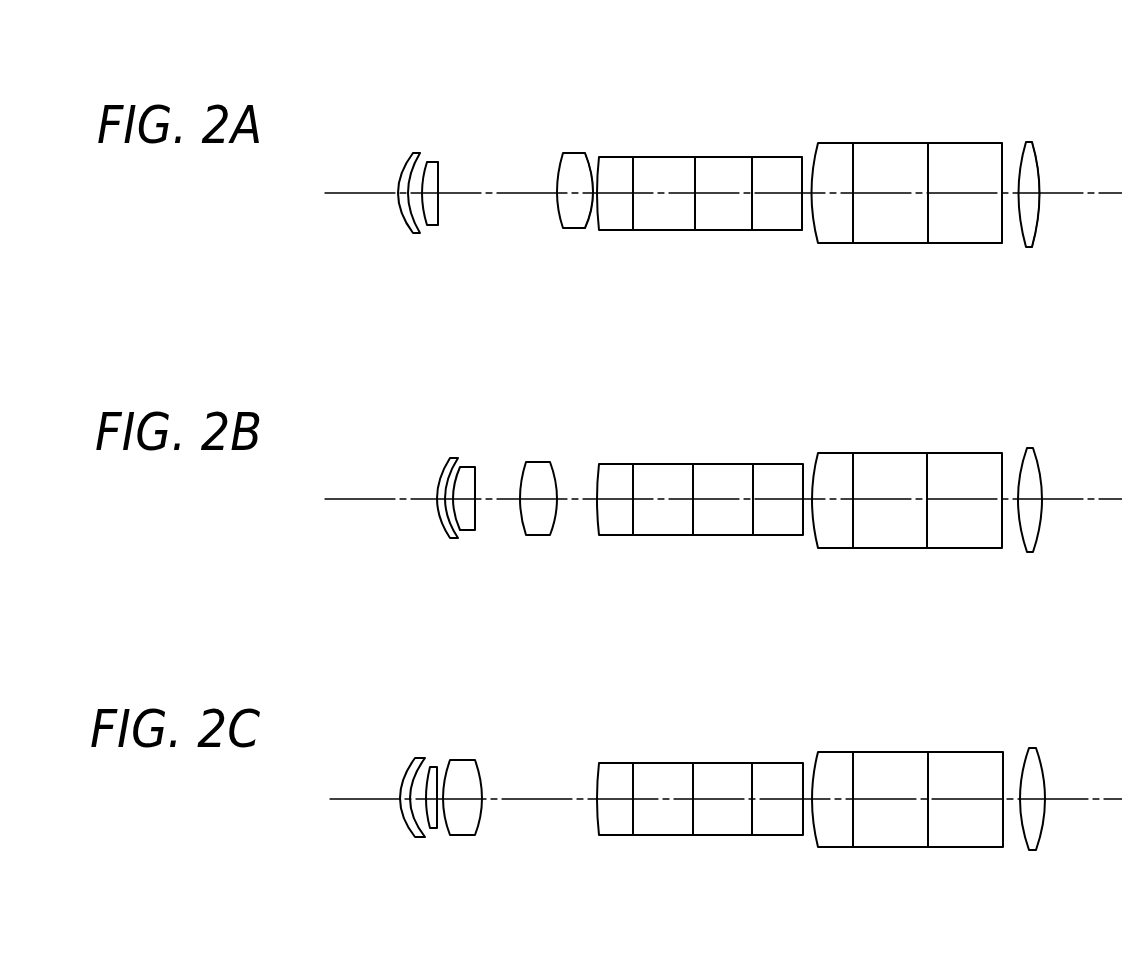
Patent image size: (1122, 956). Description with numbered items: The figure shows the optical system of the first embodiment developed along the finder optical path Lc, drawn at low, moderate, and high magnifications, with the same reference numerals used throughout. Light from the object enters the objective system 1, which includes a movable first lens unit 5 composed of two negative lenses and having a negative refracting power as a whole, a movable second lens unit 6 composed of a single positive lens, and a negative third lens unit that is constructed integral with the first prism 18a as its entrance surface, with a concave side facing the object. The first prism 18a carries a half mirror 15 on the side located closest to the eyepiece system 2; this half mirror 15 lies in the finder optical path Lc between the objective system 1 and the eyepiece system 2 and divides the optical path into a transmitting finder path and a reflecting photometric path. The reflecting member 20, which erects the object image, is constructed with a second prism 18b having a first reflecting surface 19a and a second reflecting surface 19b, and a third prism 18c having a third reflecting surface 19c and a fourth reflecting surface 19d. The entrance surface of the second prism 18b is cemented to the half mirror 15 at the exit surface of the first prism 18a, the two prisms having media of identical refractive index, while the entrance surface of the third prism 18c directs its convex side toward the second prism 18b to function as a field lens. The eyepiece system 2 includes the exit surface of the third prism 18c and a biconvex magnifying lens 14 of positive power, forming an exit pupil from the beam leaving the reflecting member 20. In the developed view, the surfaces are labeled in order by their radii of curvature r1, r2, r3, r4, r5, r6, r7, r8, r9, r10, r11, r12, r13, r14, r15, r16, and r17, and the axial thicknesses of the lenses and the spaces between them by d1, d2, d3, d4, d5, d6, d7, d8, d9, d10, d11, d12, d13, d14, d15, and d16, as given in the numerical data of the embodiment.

In FIG. 2A, the radius of curvature of first lens surface r1 is at (401, 174).
In FIG. 2A, the radius of curvature of second lens surface r2 is at (412, 152).
In FIG. 2A, the radius of curvature of third lens surface r3 is at (430, 160).
In FIG. 2A, the radius of curvature of fourth lens surface r4 is at (440, 186).
In FIG. 2A, the radius of curvature of fifth lens surface r5 is at (558, 175).
In FIG. 2A, the radius of curvature of sixth lens surface r6 is at (590, 160).
In FIG. 2A, the radius of curvature of seventh lens surface r7 is at (604, 168).
In FIG. 2A, the radius of curvature of eighth lens surface r8 is at (638, 168).
In FIG. 2A, the radius of curvature of ninth lens surface r9 is at (700, 168).
In FIG. 2A, the radius of curvature of tenth lens surface r10 is at (757, 168).
In FIG. 2A, the radius of curvature of eleventh lens surface r11 is at (794, 168).
In FIG. 2A, the radius of curvature of twelfth lens surface r12 is at (824, 158).
In FIG. 2A, the radius of curvature of thirteenth lens surface r13 is at (858, 158).
In FIG. 2A, the radius of curvature of fourteenth lens surface r14 is at (933, 158).
In FIG. 2A, the radius of curvature of fifteenth lens surface r15 is at (992, 160).
In FIG. 2A, the radius of curvature of sixteenth lens surface r16 is at (1020, 155).
In FIG. 2A, the radius of curvature of seventeenth lens surface r17 is at (1040, 170).
In FIG. 2A, the first lens thickness or space d1 is at (402, 216).
In FIG. 2A, the second lens thickness or space d2 is at (428, 222).
In FIG. 2A, the third lens thickness or space d3 is at (441, 218).
In FIG. 2A, the fourth lens thickness or space d4 is at (510, 196).
In FIG. 2A, the fifth lens thickness or space d5 is at (572, 196).
In FIG. 2A, the sixth lens thickness or space d6 is at (595, 196).
In FIG. 2A, the seventh lens thickness or space d7 is at (617, 196).
In FIG. 2A, the eighth lens thickness or space d8 is at (664, 196).
In FIG. 2A, the ninth lens thickness or space d9 is at (723, 196).
In FIG. 2A, the tenth lens thickness or space d10 is at (775, 196).
In FIG. 2A, the eleventh lens thickness or space d11 is at (808, 196).
In FIG. 2A, the twelfth lens thickness or space d12 is at (832, 196).
In FIG. 2A, the thirteenth lens thickness or space d13 is at (878, 196).
In FIG. 2A, the fourteenth lens thickness or space d14 is at (958, 196).
In FIG. 2A, the fifteenth lens thickness or space d15 is at (1010, 196).
In FIG. 2A, the sixteenth lens thickness or space d16 is at (1035, 220).
In FIG. 2B, the objective system 1 is at (523, 494).
In FIG. 2B, the eyepiece system 2 is at (1027, 494).
In FIG. 2B, the finder optical path Lc is at (378, 496).
In FIG. 2B, the first lens unit 5 is at (437, 541).
In FIG. 2B, the second lens unit 6 is at (540, 536).
In FIG. 2B, the reflecting member 20 is at (796, 494).
In FIG. 2B, the first prism 18a is at (640, 545).
In FIG. 2B, the second prism 18b is at (800, 545).
In FIG. 2B, the third prism 18c is at (1002, 553).
In FIG. 2B, the magnifying lens 14 is at (1037, 554).
In FIG. 2C, the half mirror 15 is at (633, 763).
In FIG. 2C, the first reflecting surface 19a is at (693, 763).
In FIG. 2C, the second reflecting surface 19b is at (752, 763).
In FIG. 2C, the third reflecting surface 19c is at (853, 752).
In FIG. 2C, the fourth reflecting surface 19d is at (928, 752).